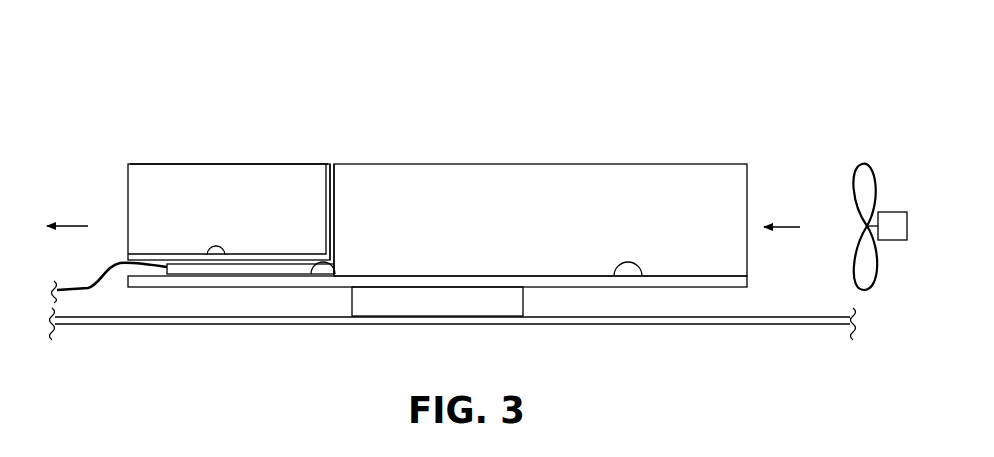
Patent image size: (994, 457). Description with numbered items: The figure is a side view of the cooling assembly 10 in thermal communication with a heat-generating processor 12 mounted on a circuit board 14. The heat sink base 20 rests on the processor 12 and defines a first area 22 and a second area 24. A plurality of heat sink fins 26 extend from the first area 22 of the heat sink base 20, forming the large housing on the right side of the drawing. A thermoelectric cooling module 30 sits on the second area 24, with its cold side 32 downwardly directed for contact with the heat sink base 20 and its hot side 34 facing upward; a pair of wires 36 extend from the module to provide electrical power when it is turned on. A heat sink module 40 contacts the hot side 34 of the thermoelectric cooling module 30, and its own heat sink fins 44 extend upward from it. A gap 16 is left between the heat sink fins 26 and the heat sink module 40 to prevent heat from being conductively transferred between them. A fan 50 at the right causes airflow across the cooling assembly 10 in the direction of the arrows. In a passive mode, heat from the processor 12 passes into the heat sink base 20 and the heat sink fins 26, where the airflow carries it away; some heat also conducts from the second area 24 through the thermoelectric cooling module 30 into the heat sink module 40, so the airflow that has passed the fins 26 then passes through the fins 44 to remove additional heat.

The cooling assembly 10 is at (110, 80).
The heat-generating processor 12 is at (482, 298).
The circuit board 14 is at (557, 318).
The gap 16 is at (330, 157).
The heat sink base 20 is at (147, 280).
The first area 22 is at (647, 280).
The second area 24 is at (338, 280).
The heat sink fins 26 is at (532, 163).
The thermoelectric cooling module 30 is at (122, 258).
The cold side 32 is at (260, 280).
The hot side 34 is at (207, 255).
The wires 36 is at (83, 288).
The heat sink module 40 is at (150, 157).
The heat sink fins 44 is at (202, 163).
The fan 50 is at (882, 163).